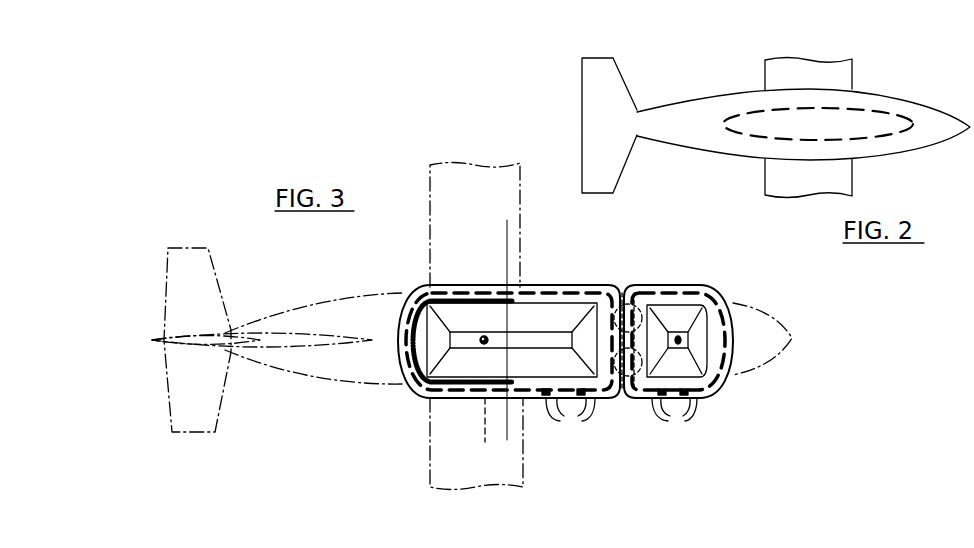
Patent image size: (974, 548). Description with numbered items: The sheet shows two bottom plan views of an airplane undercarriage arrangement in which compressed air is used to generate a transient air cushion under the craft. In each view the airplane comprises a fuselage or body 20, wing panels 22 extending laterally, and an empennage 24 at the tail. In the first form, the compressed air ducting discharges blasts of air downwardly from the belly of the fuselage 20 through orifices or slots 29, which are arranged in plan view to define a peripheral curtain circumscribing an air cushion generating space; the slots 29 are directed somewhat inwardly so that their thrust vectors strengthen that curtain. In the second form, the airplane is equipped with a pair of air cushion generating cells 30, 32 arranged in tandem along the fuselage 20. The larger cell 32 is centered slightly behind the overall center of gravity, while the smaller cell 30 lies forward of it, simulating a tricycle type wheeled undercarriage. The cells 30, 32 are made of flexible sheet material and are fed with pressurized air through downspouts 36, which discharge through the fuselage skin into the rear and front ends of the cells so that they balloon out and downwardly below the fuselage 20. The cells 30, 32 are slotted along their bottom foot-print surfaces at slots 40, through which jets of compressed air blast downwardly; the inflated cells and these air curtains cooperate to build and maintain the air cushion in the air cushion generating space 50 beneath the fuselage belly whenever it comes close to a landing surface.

In FIG. 2, the fuselage 20 is at (716, 87).
In FIG. 3, the fuselage 20 is at (375, 291).
In FIG. 2, the wing panels 22 is at (840, 64).
In FIG. 3, the wing panels 22 is at (522, 233).
In FIG. 2, the empennage 24 is at (579, 98).
In FIG. 3, the empennage 24 is at (162, 267).
In FIG. 2, the orifices or slots 29 is at (893, 116).
In FIG. 3, the air cushion generating cell 30 is at (700, 283).
In FIG. 3, the air cushion generating cell 32 is at (594, 283).
In FIG. 3, the downspouts 36 is at (631, 290).
In FIG. 3, the slots 40 is at (619, 411).
In FIG. 3, the air cushion generating space 50 is at (540, 324).